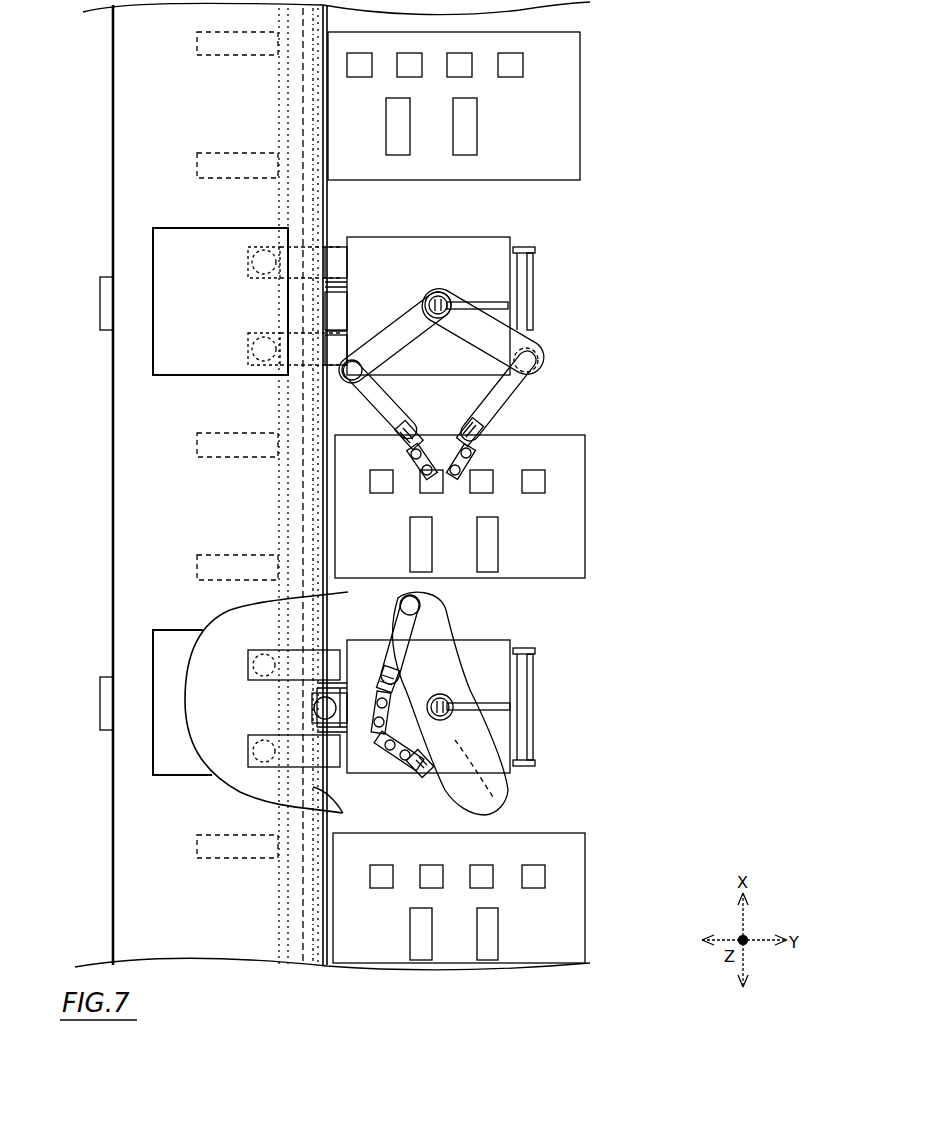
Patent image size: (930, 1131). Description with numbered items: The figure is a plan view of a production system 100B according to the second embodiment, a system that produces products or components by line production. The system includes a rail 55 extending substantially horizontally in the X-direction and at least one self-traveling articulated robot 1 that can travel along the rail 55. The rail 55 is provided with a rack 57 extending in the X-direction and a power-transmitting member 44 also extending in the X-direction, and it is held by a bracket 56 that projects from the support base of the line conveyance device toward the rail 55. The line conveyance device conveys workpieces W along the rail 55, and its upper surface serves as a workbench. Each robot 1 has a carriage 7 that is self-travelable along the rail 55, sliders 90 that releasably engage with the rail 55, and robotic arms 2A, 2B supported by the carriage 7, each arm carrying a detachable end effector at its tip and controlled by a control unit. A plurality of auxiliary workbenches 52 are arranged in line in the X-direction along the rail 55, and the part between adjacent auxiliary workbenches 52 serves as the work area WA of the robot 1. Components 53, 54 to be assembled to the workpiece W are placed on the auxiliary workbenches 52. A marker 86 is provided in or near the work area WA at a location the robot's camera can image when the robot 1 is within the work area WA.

The self-traveling articulated robot 1 is at (502, 504).
The robotic arm 2A is at (440, 612).
The robotic arm 2B is at (552, 358).
The carriage 7 is at (515, 247).
The power-transmitting member 44 is at (332, 969).
The auxiliary workbench 52 is at (580, 100).
The component 53 is at (523, 64).
The component 54 is at (477, 150).
The rail 55 is at (280, 620).
The bracket 56 is at (197, 165).
The rack 57 is at (343, 807).
The marker 86 is at (103, 296).
The slider 90 is at (337, 246).
The production system 100B is at (765, 387).
The workpiece W is at (153, 240).
The work area WA is at (440, 217).